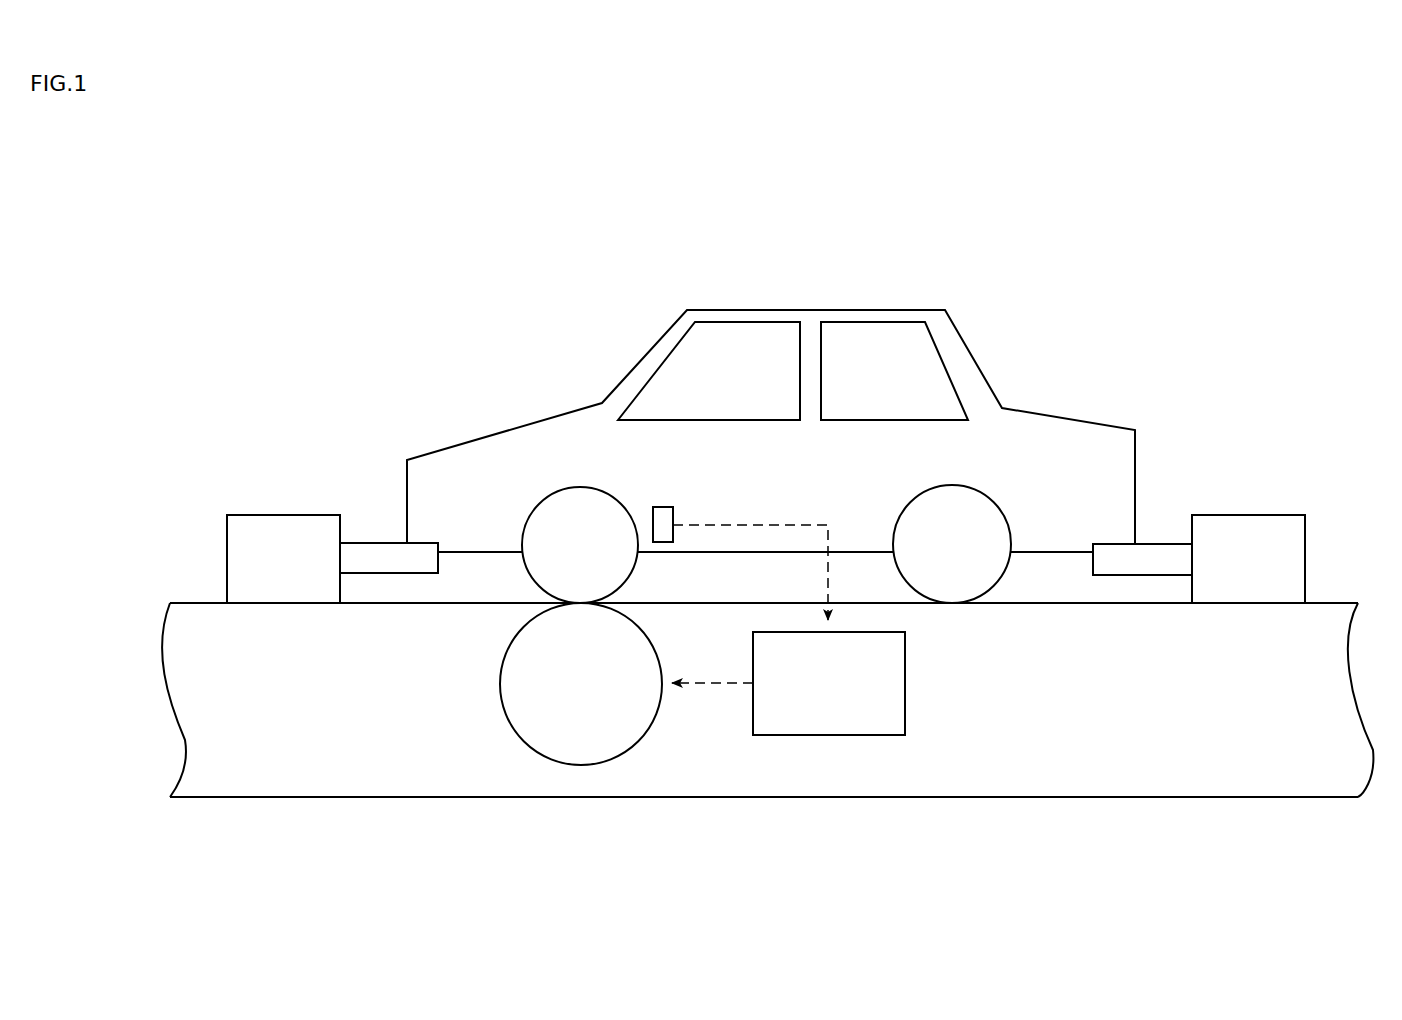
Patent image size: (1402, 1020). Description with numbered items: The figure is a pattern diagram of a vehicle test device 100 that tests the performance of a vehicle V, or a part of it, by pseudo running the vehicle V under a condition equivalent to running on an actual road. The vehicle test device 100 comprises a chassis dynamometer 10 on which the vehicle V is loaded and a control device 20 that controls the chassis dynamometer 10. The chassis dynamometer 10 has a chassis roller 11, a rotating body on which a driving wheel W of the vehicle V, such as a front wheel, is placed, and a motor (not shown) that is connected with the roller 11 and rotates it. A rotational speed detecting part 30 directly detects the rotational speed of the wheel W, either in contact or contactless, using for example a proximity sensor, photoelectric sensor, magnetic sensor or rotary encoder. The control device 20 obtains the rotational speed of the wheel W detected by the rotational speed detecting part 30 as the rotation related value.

The vehicle test device 100 is at (375, 298).
The vehicle V is at (1069, 418).
The wheel W is at (527, 523).
The rotational speed detecting part 30 is at (662, 507).
The chassis dynamometer 10 is at (420, 661).
The roller 11 is at (505, 718).
The control device 20 is at (905, 683).